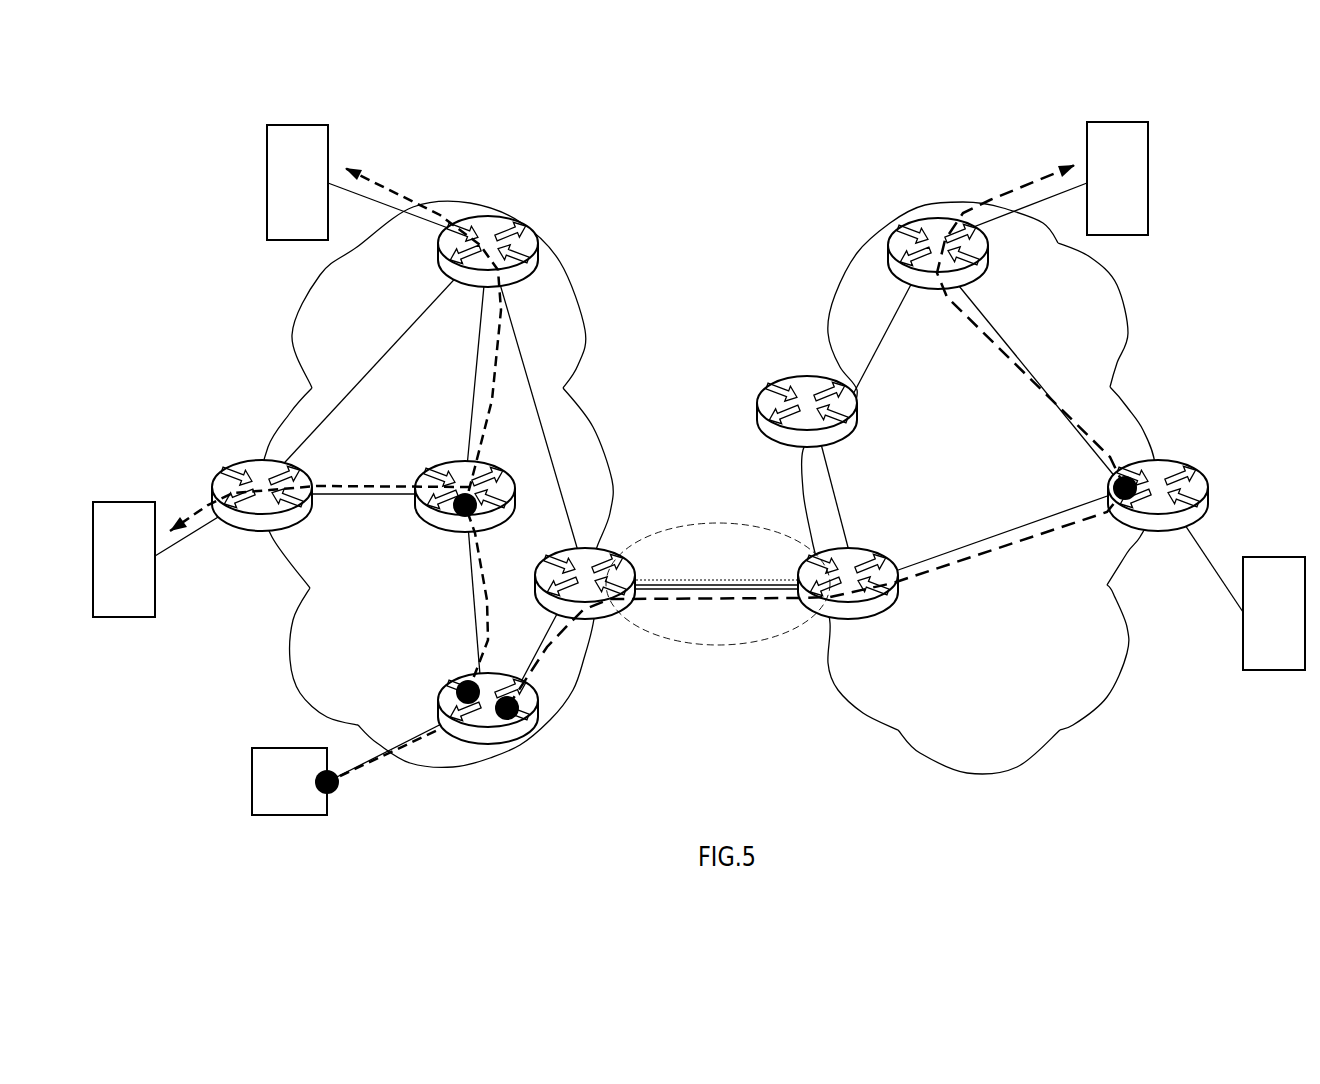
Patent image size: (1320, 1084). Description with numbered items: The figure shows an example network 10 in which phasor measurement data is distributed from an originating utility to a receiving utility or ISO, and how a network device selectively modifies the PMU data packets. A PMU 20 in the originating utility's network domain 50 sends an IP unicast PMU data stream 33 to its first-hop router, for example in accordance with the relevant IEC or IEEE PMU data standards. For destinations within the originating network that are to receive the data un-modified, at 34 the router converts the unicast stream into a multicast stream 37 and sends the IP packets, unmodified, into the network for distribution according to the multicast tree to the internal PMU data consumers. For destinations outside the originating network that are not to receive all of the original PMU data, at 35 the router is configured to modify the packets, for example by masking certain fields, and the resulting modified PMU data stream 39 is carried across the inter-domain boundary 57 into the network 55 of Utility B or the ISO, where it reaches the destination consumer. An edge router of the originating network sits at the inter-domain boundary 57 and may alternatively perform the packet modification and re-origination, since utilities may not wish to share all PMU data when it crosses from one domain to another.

The network 10 is at (933, 128).
The PMU 20 is at (250, 787).
The IP unicast PMU data stream 33 is at (355, 757).
The conversion to multicast 34 is at (453, 690).
The packet modification 35 is at (517, 727).
The multicast stream 37 is at (408, 187).
The modified PMU data stream 39 is at (565, 648).
The network domain 50 is at (288, 642).
The network 55 is at (840, 692).
The inter-domain boundary 57 is at (777, 643).